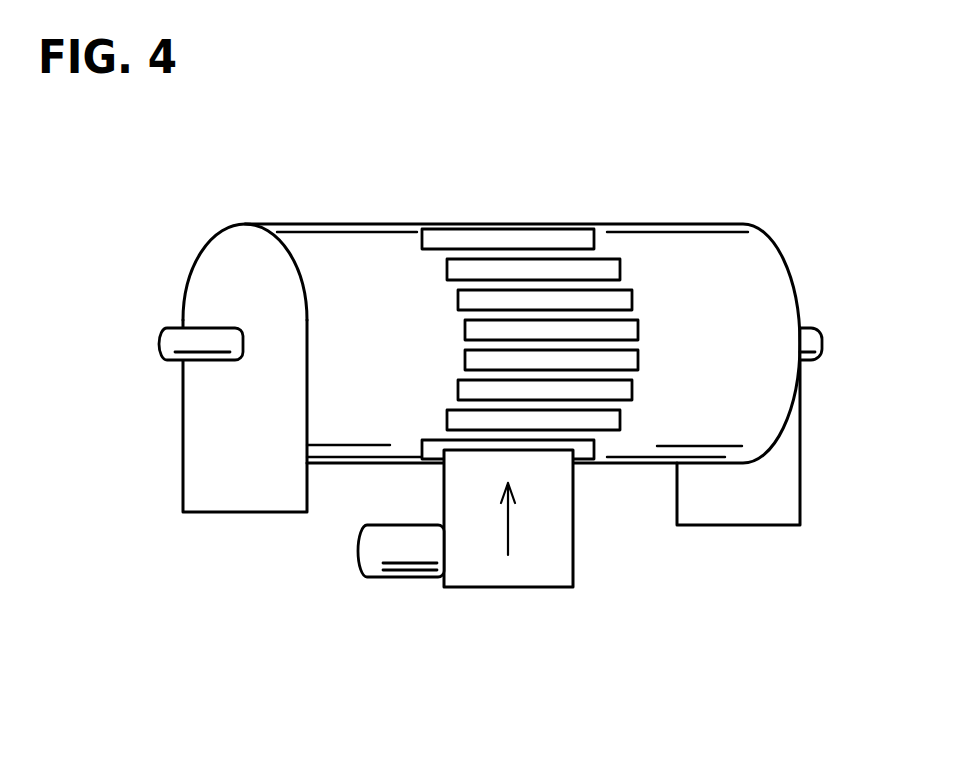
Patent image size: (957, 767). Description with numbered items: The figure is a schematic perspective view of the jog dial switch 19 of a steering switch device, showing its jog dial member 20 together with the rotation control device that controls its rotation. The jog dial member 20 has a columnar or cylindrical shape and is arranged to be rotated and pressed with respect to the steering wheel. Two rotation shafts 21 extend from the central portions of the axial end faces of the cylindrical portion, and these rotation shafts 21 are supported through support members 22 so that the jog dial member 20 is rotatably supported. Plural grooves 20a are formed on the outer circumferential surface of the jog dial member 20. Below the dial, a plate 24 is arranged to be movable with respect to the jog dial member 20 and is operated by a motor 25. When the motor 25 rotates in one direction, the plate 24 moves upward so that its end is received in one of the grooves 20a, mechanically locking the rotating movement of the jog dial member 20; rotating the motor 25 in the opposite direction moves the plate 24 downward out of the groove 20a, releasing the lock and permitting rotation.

The jog dial switch 19 is at (704, 164).
The jog dial member 20 is at (358, 222).
The grooves 20a is at (542, 233).
The rotation shafts 21 is at (158, 350).
The support members 22 is at (190, 448).
The plate 24 is at (545, 567).
The motor 25 is at (405, 558).